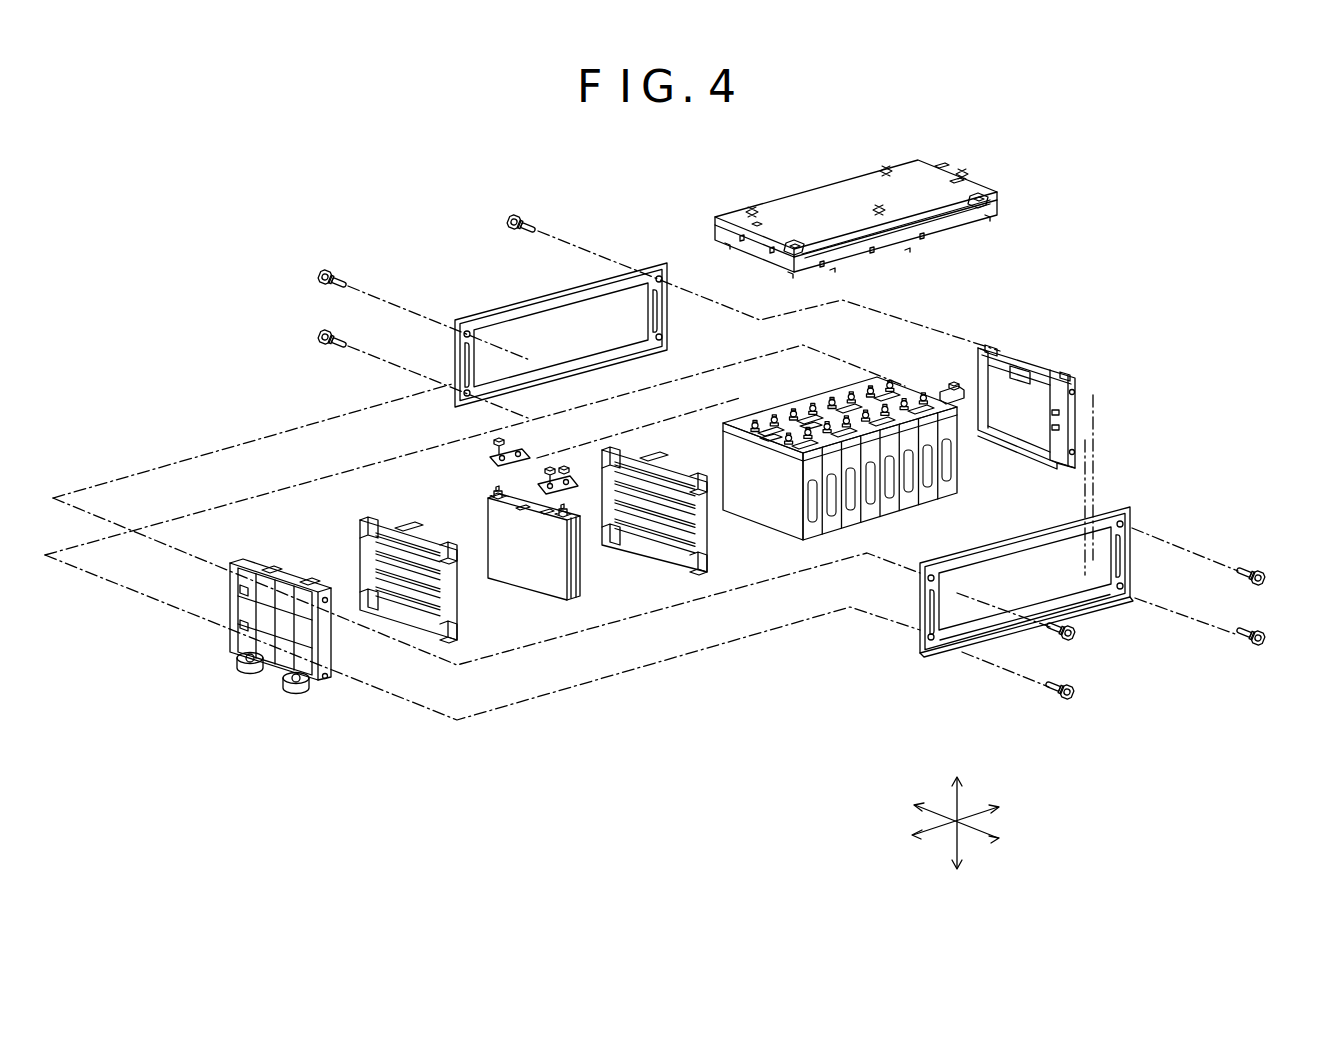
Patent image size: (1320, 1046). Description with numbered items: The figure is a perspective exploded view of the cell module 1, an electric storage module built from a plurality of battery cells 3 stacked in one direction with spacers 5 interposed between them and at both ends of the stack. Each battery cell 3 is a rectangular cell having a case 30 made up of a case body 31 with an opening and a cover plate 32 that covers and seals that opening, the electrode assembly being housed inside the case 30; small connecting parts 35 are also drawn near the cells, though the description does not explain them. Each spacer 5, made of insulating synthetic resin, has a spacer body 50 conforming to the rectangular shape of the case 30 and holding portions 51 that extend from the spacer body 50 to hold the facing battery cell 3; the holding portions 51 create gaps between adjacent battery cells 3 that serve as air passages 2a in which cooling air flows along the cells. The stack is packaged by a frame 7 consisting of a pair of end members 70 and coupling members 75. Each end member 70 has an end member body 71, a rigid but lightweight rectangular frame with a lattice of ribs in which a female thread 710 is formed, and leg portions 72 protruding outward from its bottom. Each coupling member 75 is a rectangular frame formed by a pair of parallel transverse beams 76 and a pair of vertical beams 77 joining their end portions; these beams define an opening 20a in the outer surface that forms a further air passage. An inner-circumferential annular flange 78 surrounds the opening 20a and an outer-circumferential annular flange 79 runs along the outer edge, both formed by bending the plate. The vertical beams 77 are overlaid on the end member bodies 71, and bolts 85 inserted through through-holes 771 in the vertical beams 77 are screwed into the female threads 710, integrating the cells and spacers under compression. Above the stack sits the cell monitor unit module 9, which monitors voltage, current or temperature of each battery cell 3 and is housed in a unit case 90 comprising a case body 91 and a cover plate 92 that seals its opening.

The cell module 1 is at (256, 186).
The air passage 2a is at (949, 480).
The opening 20a is at (602, 338).
The battery cell 3 is at (590, 574).
The case 30 is at (440, 484).
The case body 31 is at (516, 532).
The cover plate 32 is at (496, 497).
The bus bar 35 is at (549, 461).
The spacer 5 is at (702, 582).
The spacer body 50 is at (421, 601).
The holding portion 51 is at (454, 556).
The frame 7 is at (220, 603).
The end member 70 is at (1047, 352).
The end member body 71 is at (256, 618).
The leg portion 72 is at (254, 662).
The female thread 710 is at (1076, 388).
The coupling member 75 is at (576, 276).
The transverse beam 76 is at (506, 302).
The vertical beam 77 is at (662, 294).
The through-hole 771 is at (668, 345).
The inner-circumferential annular flange 78 is at (1111, 604).
The outer-circumferential annular flange 79 is at (1101, 621).
The bolt 85 is at (511, 216).
The cell monitor unit module 9 is at (836, 170).
The unit case 90 is at (1058, 166).
The case body 91 is at (958, 226).
The cover plate 92 is at (944, 178).